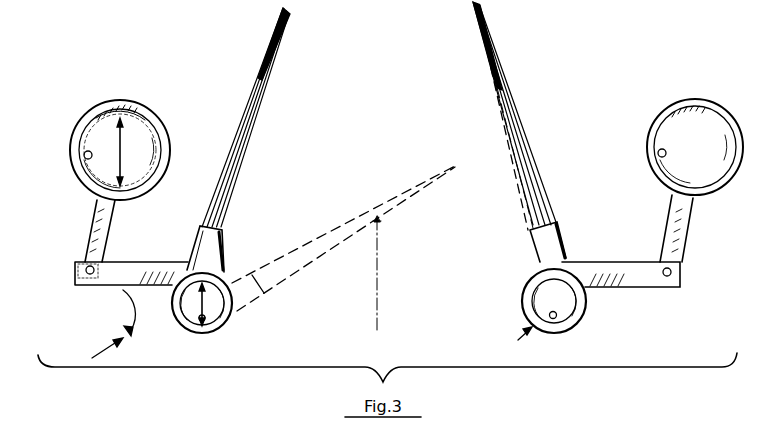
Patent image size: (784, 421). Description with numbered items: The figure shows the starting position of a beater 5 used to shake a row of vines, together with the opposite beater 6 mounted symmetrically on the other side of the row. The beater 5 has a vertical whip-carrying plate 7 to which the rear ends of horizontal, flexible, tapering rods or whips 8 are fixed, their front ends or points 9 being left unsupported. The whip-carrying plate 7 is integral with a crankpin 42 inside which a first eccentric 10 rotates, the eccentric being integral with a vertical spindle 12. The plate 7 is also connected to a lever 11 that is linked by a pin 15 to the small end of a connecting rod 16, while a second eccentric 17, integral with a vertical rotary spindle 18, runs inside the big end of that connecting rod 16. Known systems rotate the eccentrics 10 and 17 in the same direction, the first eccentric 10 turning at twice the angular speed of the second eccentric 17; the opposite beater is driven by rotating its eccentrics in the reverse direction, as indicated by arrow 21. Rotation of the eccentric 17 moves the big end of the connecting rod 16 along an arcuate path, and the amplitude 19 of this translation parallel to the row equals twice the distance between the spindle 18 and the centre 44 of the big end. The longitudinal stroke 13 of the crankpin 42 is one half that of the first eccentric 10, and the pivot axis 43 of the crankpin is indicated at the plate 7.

The beater 5 is at (99, 353).
The direction arrow 6 is at (518, 340).
The vertical whip-carrying plate 7 is at (219, 248).
The rods 8 is at (235, 178).
The points 9 is at (270, 57).
The first eccentric 10 is at (226, 276).
The lever 11 is at (127, 272).
The vertical spindle 12 is at (196, 322).
The longitudinal stroke 13 is at (197, 304).
The pin 15 is at (80, 269).
The connecting rod 16 is at (92, 232).
The second eccentric 17 is at (88, 133).
The vertical rotary spindle 18 is at (84, 158).
The amplitude 19 is at (125, 147).
The arrow 21 is at (120, 310).
The crankpin 42 is at (203, 314).
The pivot axis 43 is at (220, 308).
The centre of the big end of the connecting rod 44 is at (125, 158).